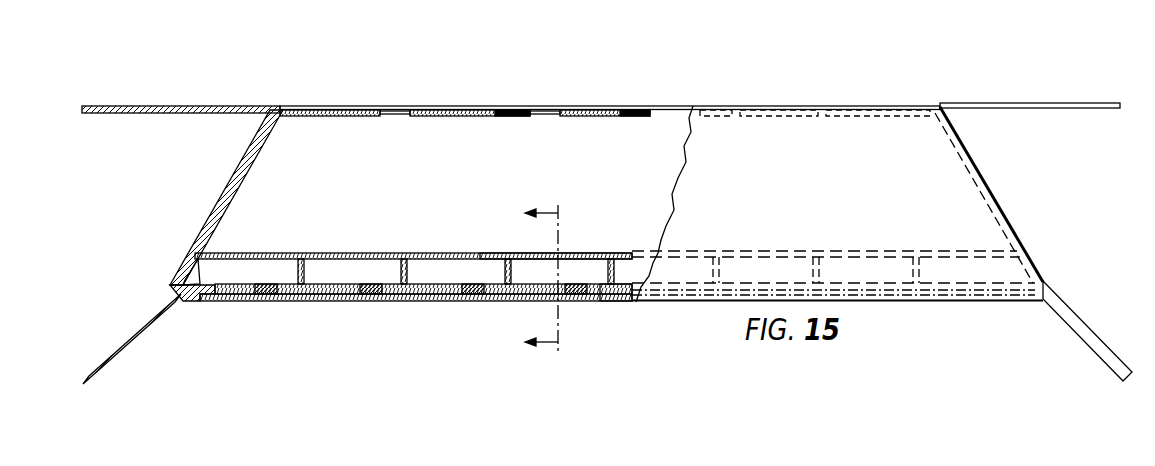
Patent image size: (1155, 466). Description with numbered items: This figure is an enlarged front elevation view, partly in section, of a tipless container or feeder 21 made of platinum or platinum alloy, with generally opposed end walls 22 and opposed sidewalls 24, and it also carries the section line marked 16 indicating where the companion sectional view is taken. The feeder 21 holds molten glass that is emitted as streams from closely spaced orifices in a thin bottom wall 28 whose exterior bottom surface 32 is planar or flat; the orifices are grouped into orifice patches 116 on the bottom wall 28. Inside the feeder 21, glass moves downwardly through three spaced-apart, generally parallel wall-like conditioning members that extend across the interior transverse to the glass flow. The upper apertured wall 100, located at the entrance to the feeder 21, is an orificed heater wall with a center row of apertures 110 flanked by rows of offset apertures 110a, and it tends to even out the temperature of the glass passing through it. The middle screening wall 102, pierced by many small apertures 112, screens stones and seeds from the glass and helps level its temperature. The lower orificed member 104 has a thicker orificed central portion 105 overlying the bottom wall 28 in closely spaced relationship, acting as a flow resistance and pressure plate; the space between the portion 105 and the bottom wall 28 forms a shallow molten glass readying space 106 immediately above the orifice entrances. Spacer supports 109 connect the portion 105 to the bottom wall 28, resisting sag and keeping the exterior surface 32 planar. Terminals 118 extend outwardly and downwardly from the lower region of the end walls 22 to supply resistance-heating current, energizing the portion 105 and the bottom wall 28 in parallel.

The upper apertured wall 100 is at (347, 106).
The apertures 110 is at (402, 109).
The offset apertures 110a is at (497, 114).
The tipless feeder 21 is at (947, 106).
The end walls 22 is at (257, 135).
The sidewalls 24 is at (905, 182).
The lower orificed member 104 is at (193, 281).
The apertures 112 is at (245, 236).
The orificed central portion 105 is at (275, 283).
The screening wall 102 is at (492, 253).
The exterior bottom surface 32 is at (218, 302).
The spacer supports 109 is at (252, 302).
The orifice patches 116 is at (270, 302).
The molten glass readying space 106 is at (392, 296).
The bottom wall 28 is at (590, 302).
The terminals 118 is at (106, 371).
The section line 16- 16 is at (522, 279).